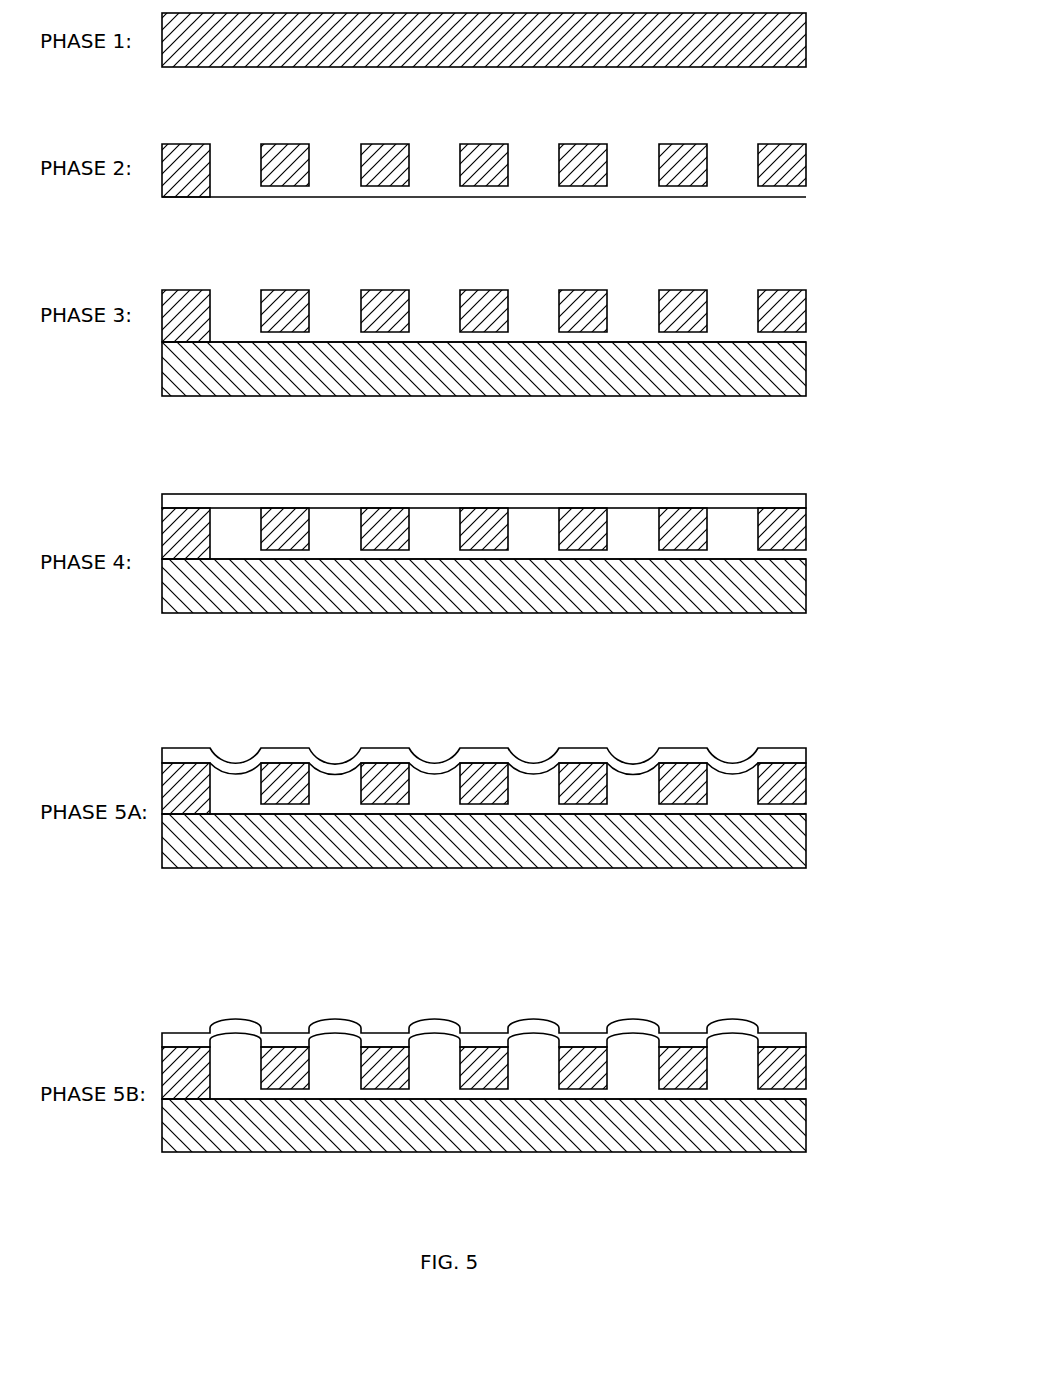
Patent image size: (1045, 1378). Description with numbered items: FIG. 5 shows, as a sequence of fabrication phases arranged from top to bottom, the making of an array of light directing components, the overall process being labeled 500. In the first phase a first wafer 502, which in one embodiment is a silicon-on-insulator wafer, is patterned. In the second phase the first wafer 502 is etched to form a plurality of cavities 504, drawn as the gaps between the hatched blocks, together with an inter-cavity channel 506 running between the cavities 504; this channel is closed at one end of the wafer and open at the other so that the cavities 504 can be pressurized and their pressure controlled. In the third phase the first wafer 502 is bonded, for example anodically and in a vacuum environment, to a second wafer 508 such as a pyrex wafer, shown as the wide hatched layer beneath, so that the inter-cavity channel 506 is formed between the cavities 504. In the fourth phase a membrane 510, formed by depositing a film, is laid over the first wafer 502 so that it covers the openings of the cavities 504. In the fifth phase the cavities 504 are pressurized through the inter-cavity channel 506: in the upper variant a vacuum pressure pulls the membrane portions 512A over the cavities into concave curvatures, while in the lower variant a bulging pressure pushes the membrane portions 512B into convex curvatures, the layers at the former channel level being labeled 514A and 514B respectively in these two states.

The process flow 500 is at (490, 1319).
The first wafer 502 is at (540, 556).
The cavities 504 is at (481, 668).
The inter-cavity channel 506 is at (540, 366).
The second wafer 508 is at (540, 747).
The membrane 510 is at (540, 762).
The membrane portions 512A is at (484, 726).
The membrane portions 512B is at (484, 1008).
The sealed cavities under film (phase 5A) 514A is at (547, 803).
The sealed cavities under film (phase 5B) 514B is at (547, 1089).